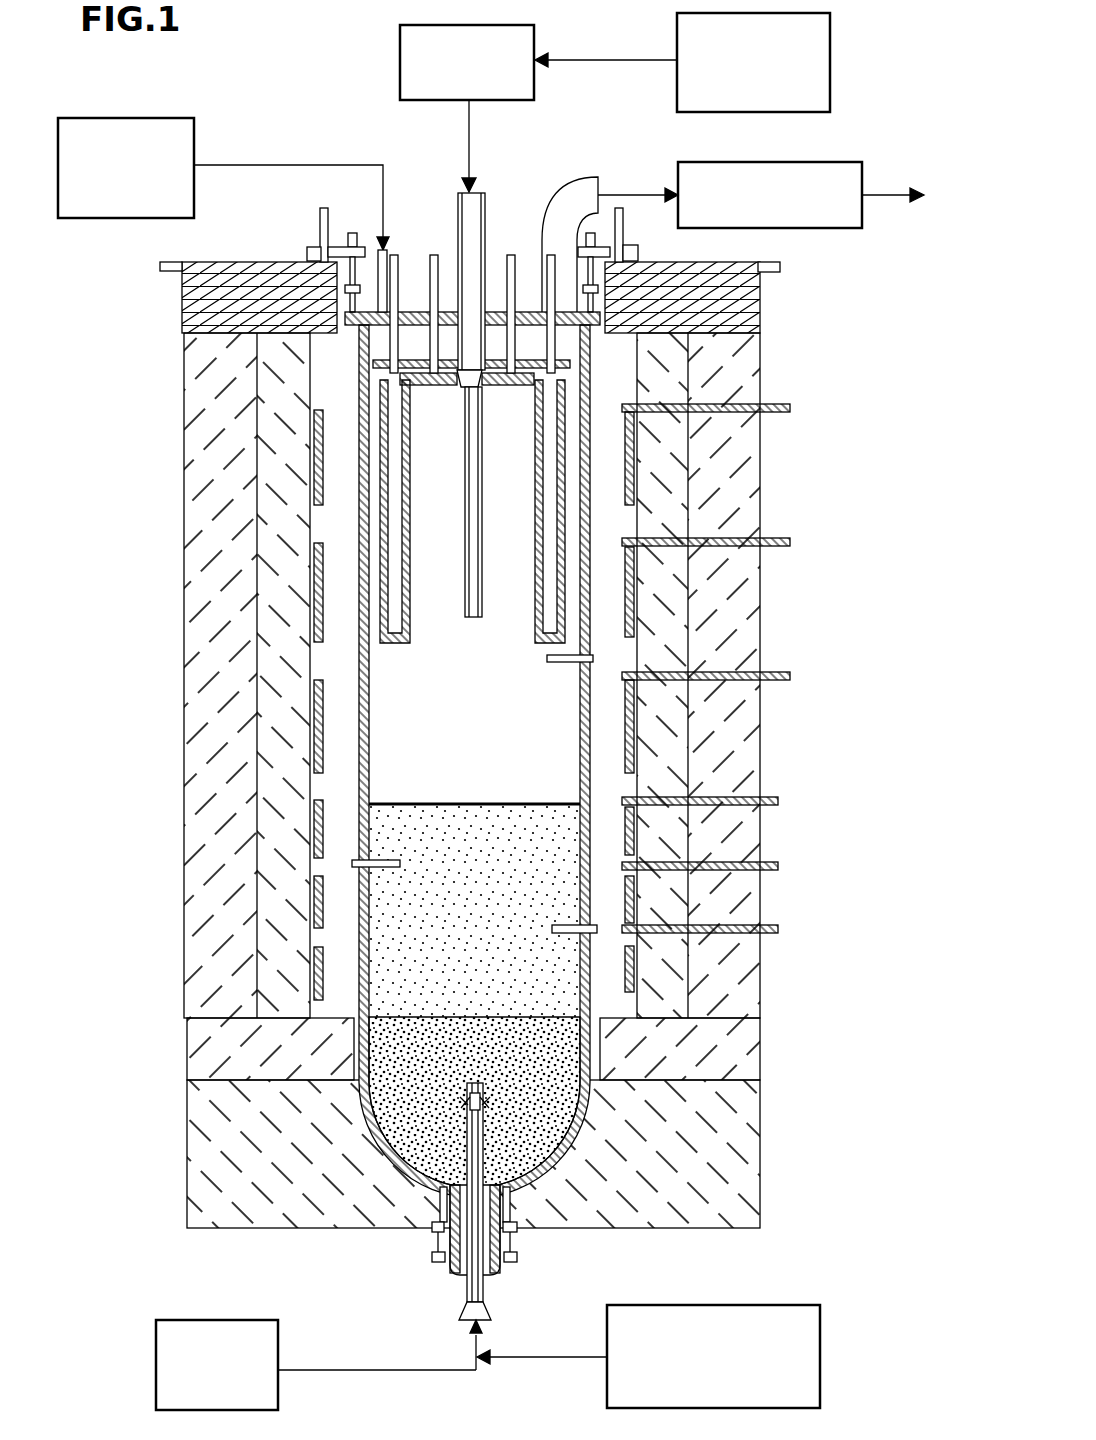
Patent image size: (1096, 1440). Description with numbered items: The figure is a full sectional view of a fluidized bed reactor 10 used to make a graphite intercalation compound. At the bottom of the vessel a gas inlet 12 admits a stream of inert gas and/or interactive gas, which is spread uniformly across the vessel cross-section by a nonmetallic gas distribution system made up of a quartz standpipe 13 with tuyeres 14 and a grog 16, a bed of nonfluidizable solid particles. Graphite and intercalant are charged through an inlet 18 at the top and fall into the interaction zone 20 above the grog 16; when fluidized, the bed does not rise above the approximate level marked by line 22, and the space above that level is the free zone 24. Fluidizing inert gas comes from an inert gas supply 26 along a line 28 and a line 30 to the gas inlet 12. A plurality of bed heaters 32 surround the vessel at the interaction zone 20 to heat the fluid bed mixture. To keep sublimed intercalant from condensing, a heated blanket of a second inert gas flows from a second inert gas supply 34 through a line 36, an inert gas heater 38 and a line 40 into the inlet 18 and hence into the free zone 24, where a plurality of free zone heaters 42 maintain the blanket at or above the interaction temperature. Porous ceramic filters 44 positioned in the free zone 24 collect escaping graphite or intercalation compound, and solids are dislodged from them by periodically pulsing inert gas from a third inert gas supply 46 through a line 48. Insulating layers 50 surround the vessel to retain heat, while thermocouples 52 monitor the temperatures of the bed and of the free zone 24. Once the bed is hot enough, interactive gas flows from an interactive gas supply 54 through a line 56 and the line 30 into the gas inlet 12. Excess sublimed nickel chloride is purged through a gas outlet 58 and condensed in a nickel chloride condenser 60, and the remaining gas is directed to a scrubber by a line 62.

The fluidized bed reactor 10 is at (126, 745).
The gas inlet 12 is at (485, 1322).
The quartz standpipe 13 is at (470, 1142).
The tuyeres 14 is at (460, 1104).
The grog 16 is at (494, 1062).
The inlet 18 is at (462, 190).
The interaction zone 20 is at (486, 877).
The line 22 is at (408, 803).
The free zone 24 is at (491, 757).
The inert gas supply 26 is at (208, 1320).
The line 28 is at (340, 1370).
The line 30 is at (476, 1342).
The bed heaters 32 is at (778, 801).
The second inert gas supply 34 is at (832, 95).
The line 36 is at (603, 58).
The inert gas heater 38 is at (400, 45).
The line 40 is at (470, 137).
The free zone heaters 42 is at (790, 410).
The filters 44 is at (540, 640).
The third inert gas supply 46 is at (140, 118).
The line 48 is at (380, 200).
The insulating layers 50 is at (741, 1112).
The thermocouples 52 is at (561, 664).
The interactive gas supply 54 is at (715, 1305).
The line 56 is at (563, 1357).
The gas outlet 58 is at (553, 210).
The nickel chloride condenser 60 is at (685, 178).
The line 62 is at (878, 197).